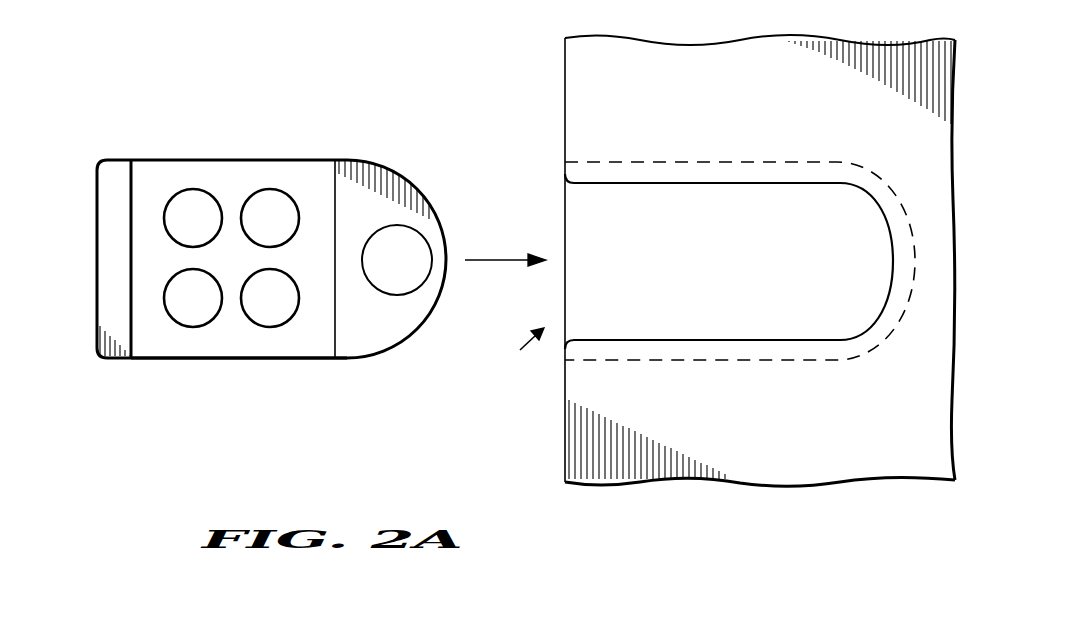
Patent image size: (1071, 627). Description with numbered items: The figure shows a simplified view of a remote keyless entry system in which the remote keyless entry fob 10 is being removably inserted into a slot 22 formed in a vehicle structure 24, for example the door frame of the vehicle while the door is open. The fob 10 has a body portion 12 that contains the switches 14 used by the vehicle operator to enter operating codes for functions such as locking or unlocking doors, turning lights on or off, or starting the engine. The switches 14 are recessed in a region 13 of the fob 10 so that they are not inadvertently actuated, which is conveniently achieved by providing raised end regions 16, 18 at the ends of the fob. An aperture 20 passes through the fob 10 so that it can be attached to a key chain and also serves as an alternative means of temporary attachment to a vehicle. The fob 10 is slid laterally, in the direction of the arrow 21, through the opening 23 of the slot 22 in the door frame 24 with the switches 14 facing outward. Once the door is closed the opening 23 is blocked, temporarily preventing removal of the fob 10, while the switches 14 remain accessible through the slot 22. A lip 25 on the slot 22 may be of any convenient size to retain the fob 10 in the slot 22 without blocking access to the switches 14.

The remote keyless entry fob 10 is at (410, 144).
The body portion 12 is at (313, 360).
The region 13 is at (313, 175).
The switches 14 is at (198, 188).
The raised end region 16 is at (108, 173).
The raised end region 18 is at (380, 344).
The aperture 20 is at (415, 272).
The arrow 21 is at (498, 258).
The slot 22 is at (743, 273).
The opening 23 is at (517, 352).
The vehicle structure 24 is at (582, 74).
The lip 25 is at (707, 174).